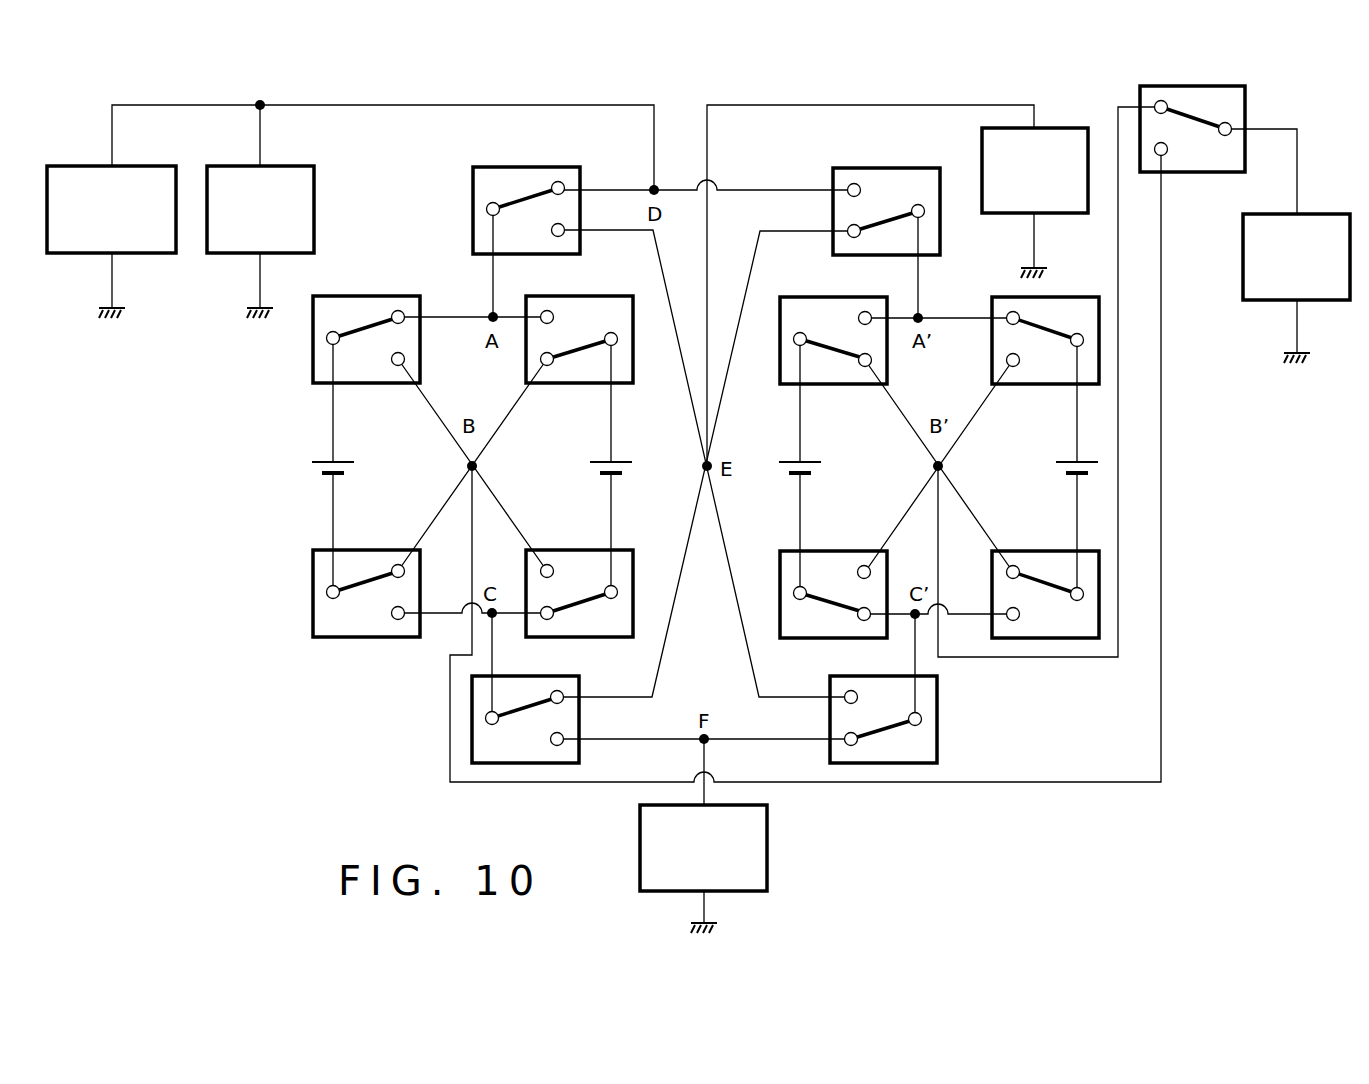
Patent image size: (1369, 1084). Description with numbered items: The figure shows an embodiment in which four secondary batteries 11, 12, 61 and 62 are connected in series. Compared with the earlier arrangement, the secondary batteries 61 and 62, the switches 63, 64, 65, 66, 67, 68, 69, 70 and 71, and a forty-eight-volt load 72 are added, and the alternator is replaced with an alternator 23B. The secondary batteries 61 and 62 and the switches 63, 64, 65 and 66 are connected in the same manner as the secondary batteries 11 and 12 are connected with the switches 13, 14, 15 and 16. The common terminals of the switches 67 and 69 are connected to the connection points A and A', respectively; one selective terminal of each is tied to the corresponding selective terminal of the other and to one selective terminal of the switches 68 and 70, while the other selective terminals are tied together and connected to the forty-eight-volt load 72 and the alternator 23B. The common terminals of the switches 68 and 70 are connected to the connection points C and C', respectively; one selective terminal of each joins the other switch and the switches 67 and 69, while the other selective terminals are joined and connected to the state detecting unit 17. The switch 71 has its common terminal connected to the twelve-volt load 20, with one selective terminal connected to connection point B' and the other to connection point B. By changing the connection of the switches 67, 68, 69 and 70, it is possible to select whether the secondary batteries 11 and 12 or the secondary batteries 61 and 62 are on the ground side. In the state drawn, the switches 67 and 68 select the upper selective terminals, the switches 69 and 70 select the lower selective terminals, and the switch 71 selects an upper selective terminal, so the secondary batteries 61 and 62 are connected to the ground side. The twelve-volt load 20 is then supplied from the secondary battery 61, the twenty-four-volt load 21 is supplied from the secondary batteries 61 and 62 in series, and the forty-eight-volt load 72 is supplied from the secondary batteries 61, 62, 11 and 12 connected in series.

The alternator 23B is at (140, 166).
The 48V-load 72 is at (290, 166).
The 24V-load 21 is at (1045, 128).
The 12V-load 20 is at (1308, 214).
The state detecting unit 17 is at (767, 830).
The secondary battery 11 is at (345, 462).
The secondary battery 12 is at (623, 462).
The secondary battery 61 is at (812, 462).
The secondary battery 62 is at (1077, 462).
The switch 13 is at (345, 296).
The switch 14 is at (365, 550).
The switch 15 is at (595, 296).
The switch 16 is at (616, 550).
The switch 63 is at (812, 297).
The switch 64 is at (832, 551).
The switch 65 is at (1077, 385).
The switch 66 is at (1000, 551).
The switch 67 is at (535, 167).
The switch 68 is at (520, 676).
The switch 69 is at (895, 168).
The switch 70 is at (940, 718).
The switch 71 is at (1182, 173).